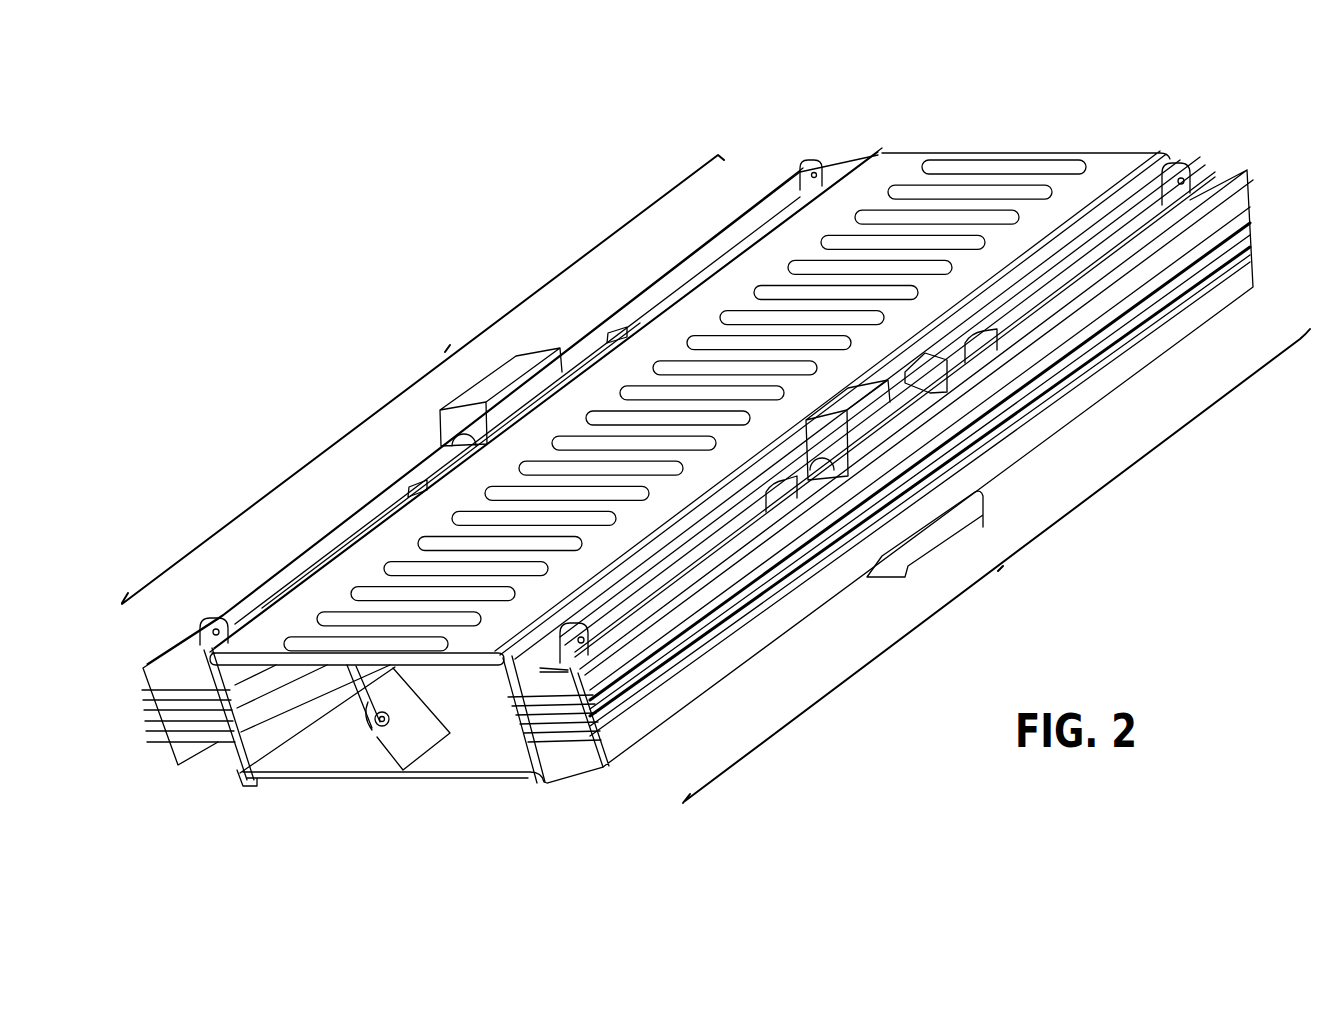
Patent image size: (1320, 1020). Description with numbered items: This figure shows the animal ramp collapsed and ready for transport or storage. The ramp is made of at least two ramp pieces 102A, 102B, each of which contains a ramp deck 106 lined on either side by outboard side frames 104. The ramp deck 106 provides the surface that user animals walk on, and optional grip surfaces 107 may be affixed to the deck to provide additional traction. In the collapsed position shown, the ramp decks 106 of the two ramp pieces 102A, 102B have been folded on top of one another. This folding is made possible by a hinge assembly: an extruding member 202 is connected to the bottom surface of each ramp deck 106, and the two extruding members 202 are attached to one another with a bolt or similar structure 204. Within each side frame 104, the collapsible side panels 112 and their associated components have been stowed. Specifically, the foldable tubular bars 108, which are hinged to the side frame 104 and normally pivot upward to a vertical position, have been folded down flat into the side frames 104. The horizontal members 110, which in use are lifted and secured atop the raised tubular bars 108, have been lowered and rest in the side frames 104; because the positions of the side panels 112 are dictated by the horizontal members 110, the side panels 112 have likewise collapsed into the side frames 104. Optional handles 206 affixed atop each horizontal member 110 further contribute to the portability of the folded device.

The ramp piece 102A is at (423, 379).
The ramp piece 102B is at (996, 566).
The side frame 104 is at (1153, 163).
The ramp deck 106 is at (903, 165).
The grip surface 107 is at (1010, 167).
The tubular bar 108 is at (697, 268).
The horizontal member 110 is at (187, 660).
The side panel 112 is at (173, 708).
The extruding member 202 is at (367, 693).
The bolt 204 is at (383, 722).
The handle 206 is at (500, 368).